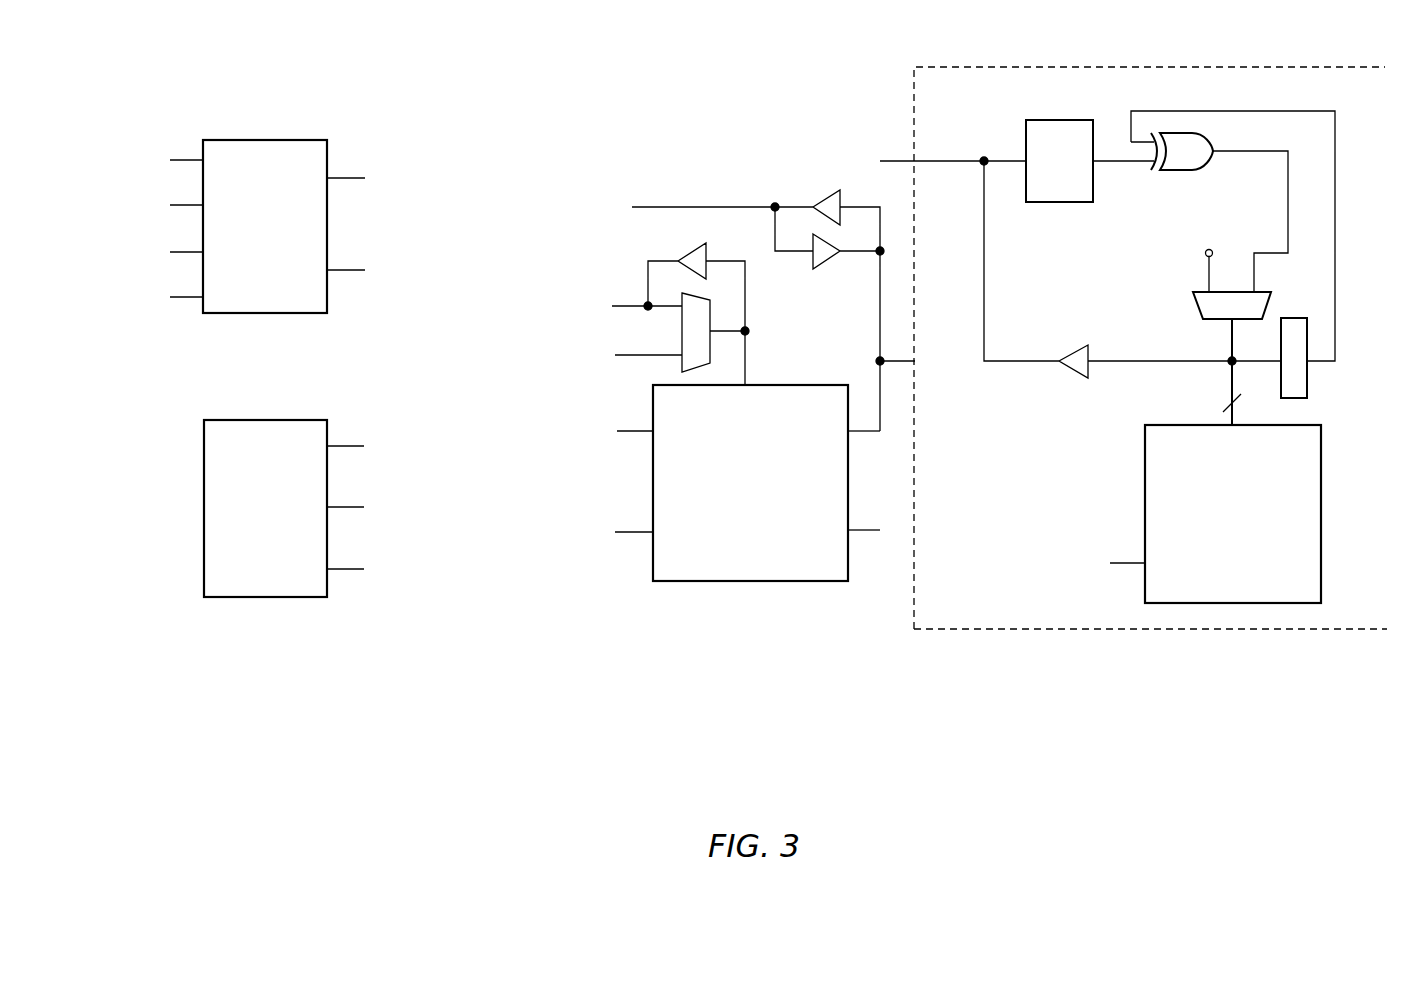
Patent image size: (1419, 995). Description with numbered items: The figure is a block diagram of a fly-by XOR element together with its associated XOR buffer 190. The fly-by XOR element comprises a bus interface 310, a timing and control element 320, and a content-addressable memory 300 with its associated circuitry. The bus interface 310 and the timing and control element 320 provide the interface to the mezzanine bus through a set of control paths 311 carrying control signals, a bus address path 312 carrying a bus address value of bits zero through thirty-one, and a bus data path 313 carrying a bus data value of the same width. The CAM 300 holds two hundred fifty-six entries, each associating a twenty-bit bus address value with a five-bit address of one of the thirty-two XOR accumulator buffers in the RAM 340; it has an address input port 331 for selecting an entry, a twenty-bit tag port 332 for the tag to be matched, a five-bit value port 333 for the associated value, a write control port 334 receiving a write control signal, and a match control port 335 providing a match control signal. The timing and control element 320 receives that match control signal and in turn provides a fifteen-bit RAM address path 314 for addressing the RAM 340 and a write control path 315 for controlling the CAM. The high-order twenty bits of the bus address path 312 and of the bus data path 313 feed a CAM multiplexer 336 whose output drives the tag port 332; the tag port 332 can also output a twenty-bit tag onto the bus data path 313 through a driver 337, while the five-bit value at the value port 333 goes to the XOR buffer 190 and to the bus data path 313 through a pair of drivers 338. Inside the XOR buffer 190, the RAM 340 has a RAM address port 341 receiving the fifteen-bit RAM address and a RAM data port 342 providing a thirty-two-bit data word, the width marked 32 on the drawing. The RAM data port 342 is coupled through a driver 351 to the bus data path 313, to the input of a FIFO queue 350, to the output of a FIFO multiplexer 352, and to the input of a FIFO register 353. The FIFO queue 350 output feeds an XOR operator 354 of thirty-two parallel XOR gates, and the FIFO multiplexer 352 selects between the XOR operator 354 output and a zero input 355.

The XOR buffer 190 is at (1103, 632).
The content addressable memory (CAM) 300 is at (757, 582).
The bus interface 310 is at (263, 420).
The control paths 311 is at (342, 443).
The bus address (BA) path 312 is at (340, 505).
The bus data (BD) path 313 is at (343, 572).
The RAM address path (RA) 314 is at (343, 178).
The write control path 315 is at (343, 270).
The timing and control element 320 is at (262, 140).
The address input port 331 is at (645, 423).
The tag port 332 is at (750, 383).
The value port 333 is at (842, 423).
The write control port 334 is at (660, 542).
The match control port 335 is at (842, 542).
The CAM multiplexer 336 is at (680, 345).
The driver 337 is at (695, 254).
The pair of drivers 338 is at (810, 240).
The random access memory (RAM) 340 is at (1322, 517).
The RAM address port 341 is at (1140, 557).
The RAM data port 342 is at (1223, 430).
The FIFO queue 350 is at (1025, 143).
The driver 351 is at (1078, 345).
The FIFO multiplexer 352 is at (1272, 305).
The FIFO register 353 is at (1308, 375).
The XOR operator 354 is at (1177, 170).
The zero input 355 is at (1205, 252).
The 32-bit bus width 32 is at (1217, 407).